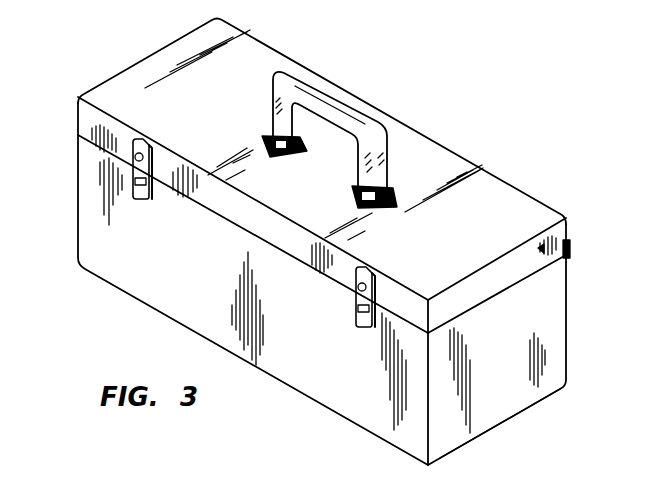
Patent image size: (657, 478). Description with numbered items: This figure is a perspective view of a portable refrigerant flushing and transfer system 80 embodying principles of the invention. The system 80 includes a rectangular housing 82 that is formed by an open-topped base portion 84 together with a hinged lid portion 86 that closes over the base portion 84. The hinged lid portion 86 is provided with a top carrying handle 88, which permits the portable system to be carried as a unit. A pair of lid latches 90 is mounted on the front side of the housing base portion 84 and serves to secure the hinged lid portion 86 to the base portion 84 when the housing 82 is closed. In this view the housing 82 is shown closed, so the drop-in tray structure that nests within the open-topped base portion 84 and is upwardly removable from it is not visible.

The portable refrigerant flushing and transfer system 80 is at (123, 38).
The rectangular housing 82 is at (78, 187).
The open-topped base portion 84 is at (503, 407).
The hinged lid portion 86 is at (503, 292).
The top carrying handle 88 is at (368, 117).
The lid latches 90 is at (152, 166).